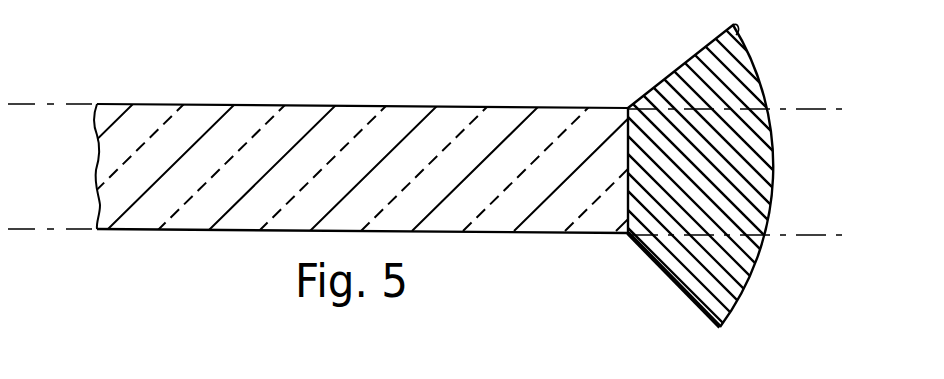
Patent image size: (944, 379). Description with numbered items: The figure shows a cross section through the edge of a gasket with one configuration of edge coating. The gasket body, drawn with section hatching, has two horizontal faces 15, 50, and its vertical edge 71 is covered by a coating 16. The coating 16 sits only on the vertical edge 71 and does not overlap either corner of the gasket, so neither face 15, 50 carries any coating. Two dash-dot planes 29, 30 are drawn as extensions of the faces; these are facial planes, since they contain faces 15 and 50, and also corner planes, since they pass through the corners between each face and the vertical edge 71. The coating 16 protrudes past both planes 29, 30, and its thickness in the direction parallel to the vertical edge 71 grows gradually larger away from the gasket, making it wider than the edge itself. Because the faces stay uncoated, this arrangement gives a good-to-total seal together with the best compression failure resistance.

The face 15 is at (319, 104).
The face 50 is at (232, 231).
The coating 16 is at (658, 268).
The vertical edge 71 is at (622, 155).
The corner plane 29 is at (835, 112).
The corner plane 30 is at (833, 237).